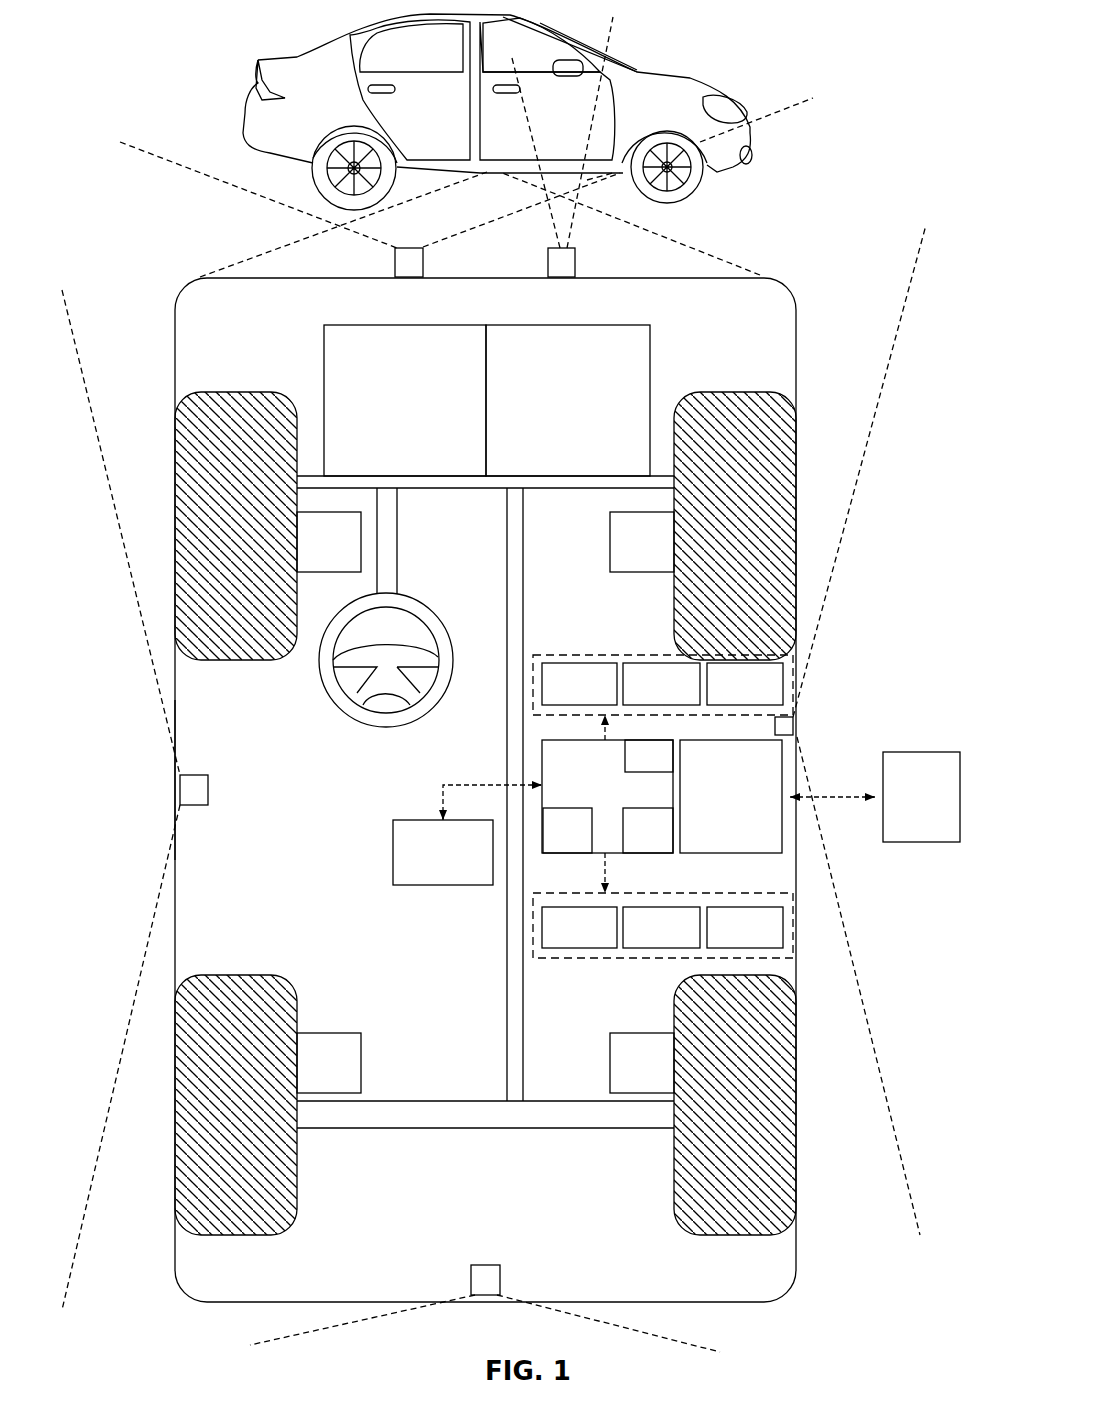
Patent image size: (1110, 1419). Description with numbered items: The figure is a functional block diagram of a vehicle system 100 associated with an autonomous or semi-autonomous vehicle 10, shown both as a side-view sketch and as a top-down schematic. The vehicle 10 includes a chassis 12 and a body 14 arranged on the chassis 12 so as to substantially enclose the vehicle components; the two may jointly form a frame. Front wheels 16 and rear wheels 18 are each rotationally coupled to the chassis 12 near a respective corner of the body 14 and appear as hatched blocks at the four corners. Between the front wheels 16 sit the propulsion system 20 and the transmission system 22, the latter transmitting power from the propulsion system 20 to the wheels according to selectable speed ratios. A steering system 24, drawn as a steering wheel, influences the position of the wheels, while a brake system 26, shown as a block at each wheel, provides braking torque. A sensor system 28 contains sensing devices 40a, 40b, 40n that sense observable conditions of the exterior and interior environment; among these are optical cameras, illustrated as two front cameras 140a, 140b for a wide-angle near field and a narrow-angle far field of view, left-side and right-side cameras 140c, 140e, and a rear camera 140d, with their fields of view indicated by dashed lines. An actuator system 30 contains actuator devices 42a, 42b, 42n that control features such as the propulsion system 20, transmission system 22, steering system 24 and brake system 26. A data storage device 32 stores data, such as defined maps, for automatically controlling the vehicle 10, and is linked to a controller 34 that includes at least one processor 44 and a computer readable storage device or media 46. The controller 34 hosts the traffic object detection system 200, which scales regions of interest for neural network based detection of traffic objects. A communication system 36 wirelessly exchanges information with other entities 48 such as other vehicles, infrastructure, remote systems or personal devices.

The vehicle 10 is at (256, 93).
The vehicle system 100 is at (790, 242).
The chassis 12 is at (506, 966).
The body 14 is at (175, 785).
The front wheels 16 is at (244, 392).
The rear wheels 18 is at (240, 1235).
The propulsion system 20 is at (378, 325).
The transmission system 22 is at (600, 325).
The steering system 24 is at (449, 618).
The brake system 26 is at (344, 553).
The sensor system 28 is at (646, 656).
The actuator system 30 is at (540, 962).
The data storage device 32 is at (458, 866).
The controller 34 is at (618, 781).
The communication system 36 is at (746, 776).
The sensing device 40a is at (599, 697).
The sensing device 40b is at (681, 697).
The sensing device 40n is at (765, 697).
The actuator device 42a is at (599, 940).
The actuator device 42b is at (681, 940).
The actuator device 42n is at (765, 940).
The processor 44 is at (582, 843).
The computer readable storage device or media 46 is at (663, 843).
The other entities 48 is at (936, 810).
The traffic object detection system 200 is at (669, 770).
The front camera 140a is at (395, 262).
The front camera 140b is at (575, 262).
The left-side camera 140c is at (208, 782).
The rear camera 140d is at (488, 1265).
The right-side camera 140e is at (792, 727).